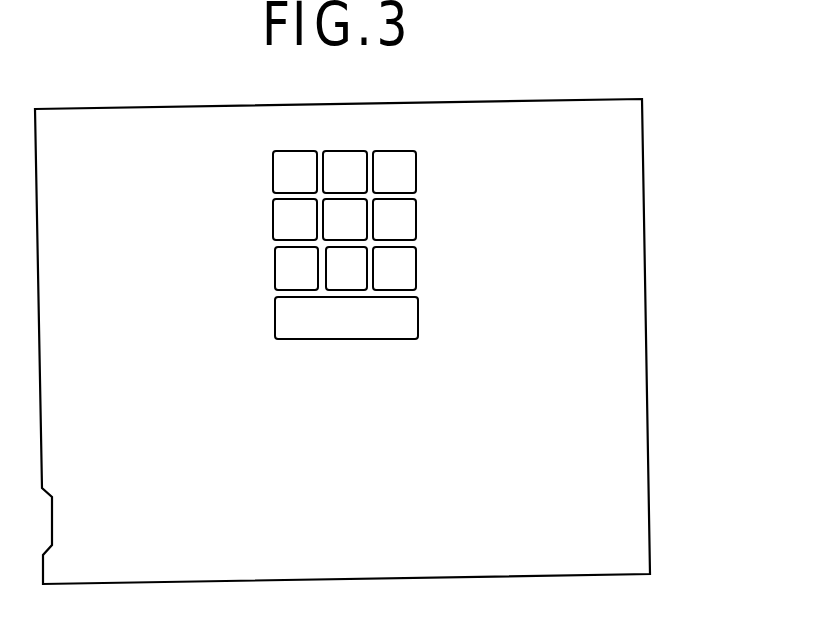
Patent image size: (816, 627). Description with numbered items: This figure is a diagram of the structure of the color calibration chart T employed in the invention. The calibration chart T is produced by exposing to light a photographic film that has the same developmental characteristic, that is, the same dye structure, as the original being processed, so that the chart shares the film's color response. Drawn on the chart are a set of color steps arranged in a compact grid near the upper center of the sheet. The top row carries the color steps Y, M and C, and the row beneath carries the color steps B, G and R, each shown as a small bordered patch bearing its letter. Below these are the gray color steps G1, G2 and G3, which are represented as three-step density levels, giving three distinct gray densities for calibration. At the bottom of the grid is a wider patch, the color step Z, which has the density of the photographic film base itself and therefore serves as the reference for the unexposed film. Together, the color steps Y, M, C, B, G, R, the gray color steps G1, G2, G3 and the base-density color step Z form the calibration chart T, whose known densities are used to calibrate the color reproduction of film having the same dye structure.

The calibration chart T is at (632, 153).
The color step Y is at (295, 172).
The color step M is at (345, 172).
The color step C is at (394, 172).
The color step B is at (295, 219).
The color step G is at (345, 219).
The color step R is at (394, 219).
The gray color step G1 is at (296, 270).
The gray color step G2 is at (346, 270).
The gray color step G3 is at (394, 270).
The color step Z is at (346, 318).